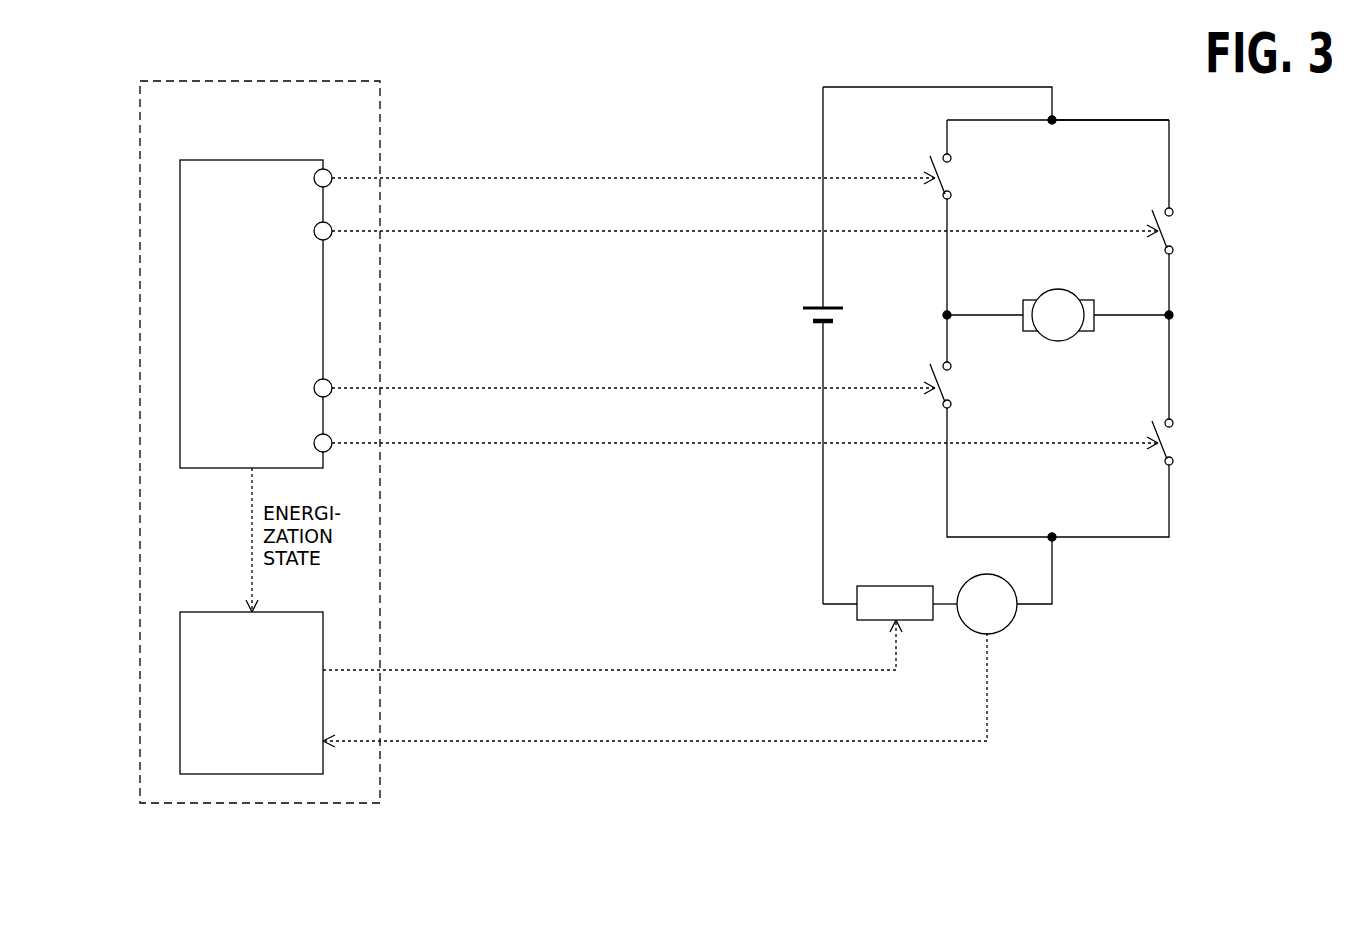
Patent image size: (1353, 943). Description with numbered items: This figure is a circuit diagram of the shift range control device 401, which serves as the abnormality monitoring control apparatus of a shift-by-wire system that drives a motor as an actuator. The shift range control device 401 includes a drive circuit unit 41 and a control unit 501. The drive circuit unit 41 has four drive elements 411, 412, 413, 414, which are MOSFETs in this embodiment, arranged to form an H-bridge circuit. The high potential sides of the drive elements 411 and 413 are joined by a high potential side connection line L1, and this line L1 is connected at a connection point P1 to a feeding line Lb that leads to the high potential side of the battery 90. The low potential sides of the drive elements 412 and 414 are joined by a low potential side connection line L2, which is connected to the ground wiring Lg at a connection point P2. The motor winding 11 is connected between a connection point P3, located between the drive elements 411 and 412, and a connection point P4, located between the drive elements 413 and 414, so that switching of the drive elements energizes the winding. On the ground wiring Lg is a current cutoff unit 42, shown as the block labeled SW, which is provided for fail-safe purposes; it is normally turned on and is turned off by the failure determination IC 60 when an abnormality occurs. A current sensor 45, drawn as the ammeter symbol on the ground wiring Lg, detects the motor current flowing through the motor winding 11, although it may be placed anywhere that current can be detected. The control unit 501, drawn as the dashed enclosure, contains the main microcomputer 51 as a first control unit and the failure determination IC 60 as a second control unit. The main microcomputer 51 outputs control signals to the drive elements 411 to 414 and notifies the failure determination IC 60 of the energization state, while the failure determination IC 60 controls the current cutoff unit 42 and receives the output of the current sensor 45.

The control unit 501 is at (382, 100).
The main microcomputer 51 is at (200, 160).
The failure determination IC 60 is at (200, 608).
The shift range control device 401 is at (169, 857).
The battery 90 is at (810, 304).
The feeding line Lb is at (823, 123).
The ground wiring Lg is at (823, 526).
The high potential side connection line L1 is at (1118, 118).
The low potential side connection line L2 is at (984, 534).
The connection point P1 is at (1052, 125).
The connection point P2 is at (1052, 534).
The connection point P3 is at (943, 315).
The connection point P4 is at (1173, 315).
The drive circuit unit 41 is at (1150, 582).
The drive element 411 is at (952, 193).
The drive element 412 is at (952, 402).
The drive element 413 is at (1174, 248).
The drive element 414 is at (1174, 459).
The motor winding 11 is at (1087, 330).
The current cutoff unit 42 is at (876, 585).
The current sensor 45 is at (1010, 630).